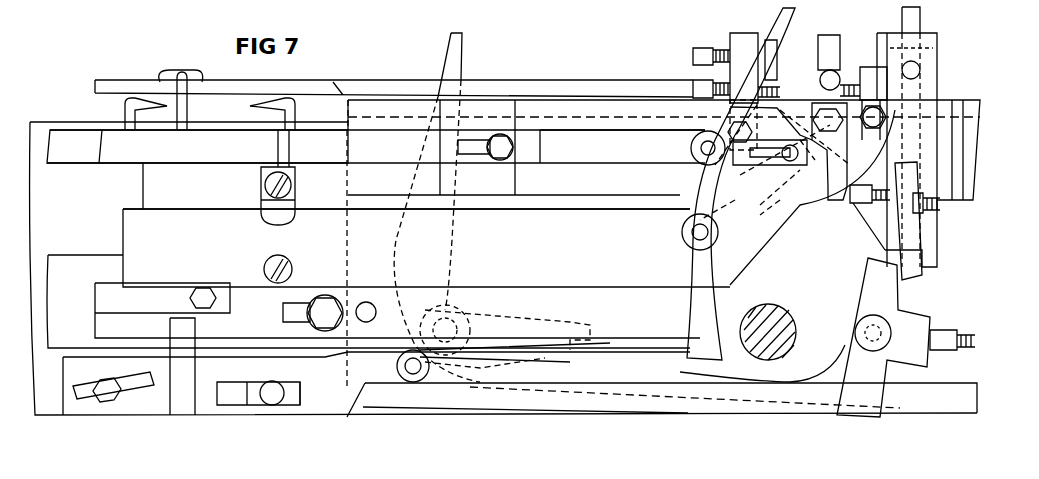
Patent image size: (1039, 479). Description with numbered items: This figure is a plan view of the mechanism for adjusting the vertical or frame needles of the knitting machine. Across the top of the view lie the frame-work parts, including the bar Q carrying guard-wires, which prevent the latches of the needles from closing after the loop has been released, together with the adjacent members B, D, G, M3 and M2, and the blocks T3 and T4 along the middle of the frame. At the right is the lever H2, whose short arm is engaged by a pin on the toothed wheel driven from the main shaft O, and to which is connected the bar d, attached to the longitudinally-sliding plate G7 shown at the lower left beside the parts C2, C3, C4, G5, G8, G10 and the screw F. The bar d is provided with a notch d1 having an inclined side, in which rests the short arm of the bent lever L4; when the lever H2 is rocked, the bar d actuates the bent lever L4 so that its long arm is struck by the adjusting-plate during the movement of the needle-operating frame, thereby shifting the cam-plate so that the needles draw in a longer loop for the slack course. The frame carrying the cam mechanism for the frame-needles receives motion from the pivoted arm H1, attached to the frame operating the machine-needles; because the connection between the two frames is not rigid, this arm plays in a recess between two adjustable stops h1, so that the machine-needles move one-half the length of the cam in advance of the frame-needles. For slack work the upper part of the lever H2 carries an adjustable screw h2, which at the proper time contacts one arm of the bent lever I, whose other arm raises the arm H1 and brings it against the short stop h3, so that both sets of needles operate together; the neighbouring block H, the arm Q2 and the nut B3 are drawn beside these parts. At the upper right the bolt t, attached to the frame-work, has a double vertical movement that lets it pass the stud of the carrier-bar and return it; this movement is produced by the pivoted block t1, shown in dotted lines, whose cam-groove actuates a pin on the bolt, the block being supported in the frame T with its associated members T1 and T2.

The frame B is at (503, 268).
The bar carrying guard-wires Q is at (197, 146).
The block D is at (406, 186).
The plate G is at (426, 248).
The bracket C2 is at (368, 301).
The bolt C3 is at (397, 310).
The bar C4 is at (162, 298).
The pin G5 is at (366, 318).
The nut G8 is at (113, 387).
The screw F is at (258, 286).
The longitudinally-sliding plate G7 is at (316, 392).
The pipe G10 is at (181, 95).
The bar M3 is at (394, 84).
The bar M2 is at (642, 86).
The block T3 is at (514, 147).
The block T4 is at (622, 160).
The bent lever L4 is at (440, 207).
The notch d1 is at (600, 355).
The bar d is at (636, 418).
The arm Q2 is at (738, 184).
The short stop h3 is at (700, 48).
The block H is at (736, 68).
The adjustable stops h1 is at (702, 80).
The pivoted arm H1 is at (852, 87).
The bent lever I is at (829, 151).
The adjustable screw h2 is at (850, 200).
The main shaft O is at (787, 246).
The lever H2 is at (883, 337).
The nut B3 is at (936, 340).
The frame T is at (913, 150).
The bolt t is at (920, 25).
The block t1 is at (937, 66).
The block T2 is at (958, 150).
The bar T1 is at (890, 221).